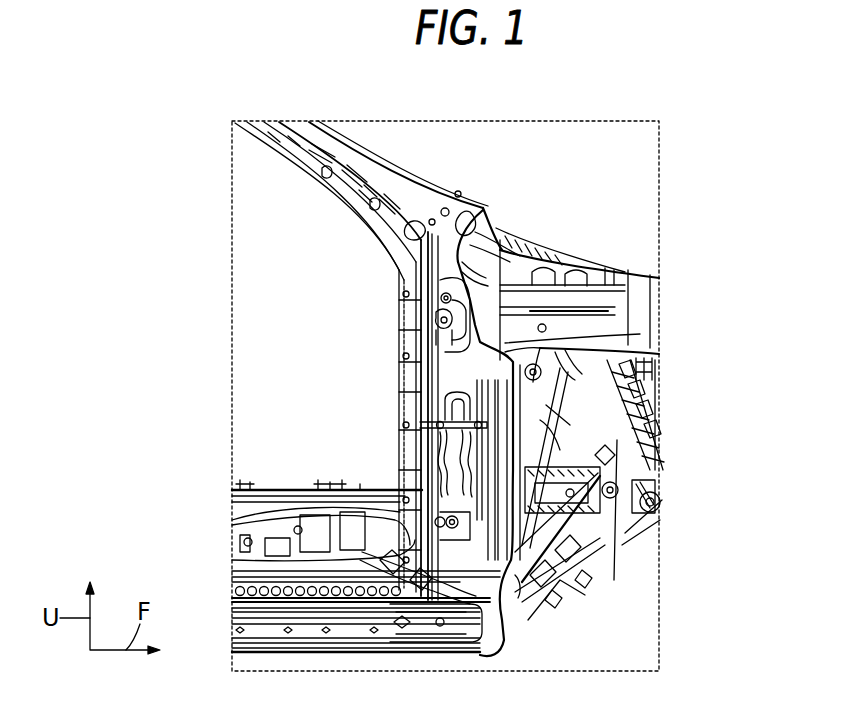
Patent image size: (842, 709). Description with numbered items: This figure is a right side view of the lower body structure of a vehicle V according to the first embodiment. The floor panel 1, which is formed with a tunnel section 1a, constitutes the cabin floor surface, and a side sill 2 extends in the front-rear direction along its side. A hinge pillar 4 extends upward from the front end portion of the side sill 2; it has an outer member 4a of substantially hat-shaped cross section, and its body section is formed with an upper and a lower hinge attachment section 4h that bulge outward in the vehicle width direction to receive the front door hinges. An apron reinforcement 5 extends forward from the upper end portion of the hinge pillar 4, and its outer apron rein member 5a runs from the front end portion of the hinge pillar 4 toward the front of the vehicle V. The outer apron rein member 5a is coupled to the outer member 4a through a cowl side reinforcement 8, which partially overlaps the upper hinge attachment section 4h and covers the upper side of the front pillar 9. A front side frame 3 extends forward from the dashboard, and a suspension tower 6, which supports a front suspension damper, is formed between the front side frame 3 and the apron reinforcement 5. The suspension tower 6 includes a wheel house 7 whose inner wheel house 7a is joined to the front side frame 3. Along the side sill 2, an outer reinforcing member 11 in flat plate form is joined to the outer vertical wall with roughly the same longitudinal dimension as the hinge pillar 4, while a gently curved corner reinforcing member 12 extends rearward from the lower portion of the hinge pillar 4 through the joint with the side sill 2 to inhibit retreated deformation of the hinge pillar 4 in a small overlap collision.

The vehicle V is at (455, 130).
The front pillar 9 is at (362, 152).
The cowl side reinforcement 8 is at (498, 257).
The hinge pillar 4 is at (398, 376).
The outer member 4a is at (438, 327).
The hinge attachment section 4h is at (446, 294).
The apron reinforcement 5 is at (622, 303).
The outer apron rein member 5a is at (613, 290).
The front side frame 3 is at (658, 527).
The suspension tower 6 is at (616, 556).
The wheel house 7 is at (567, 571).
The inner wheel house 7a is at (546, 564).
The floor panel 1 is at (327, 461).
The tunnel section 1a is at (270, 516).
The corner reinforcing member 12 is at (250, 564).
The side sill 2 is at (301, 654).
The outer reinforcing member 11 is at (434, 630).